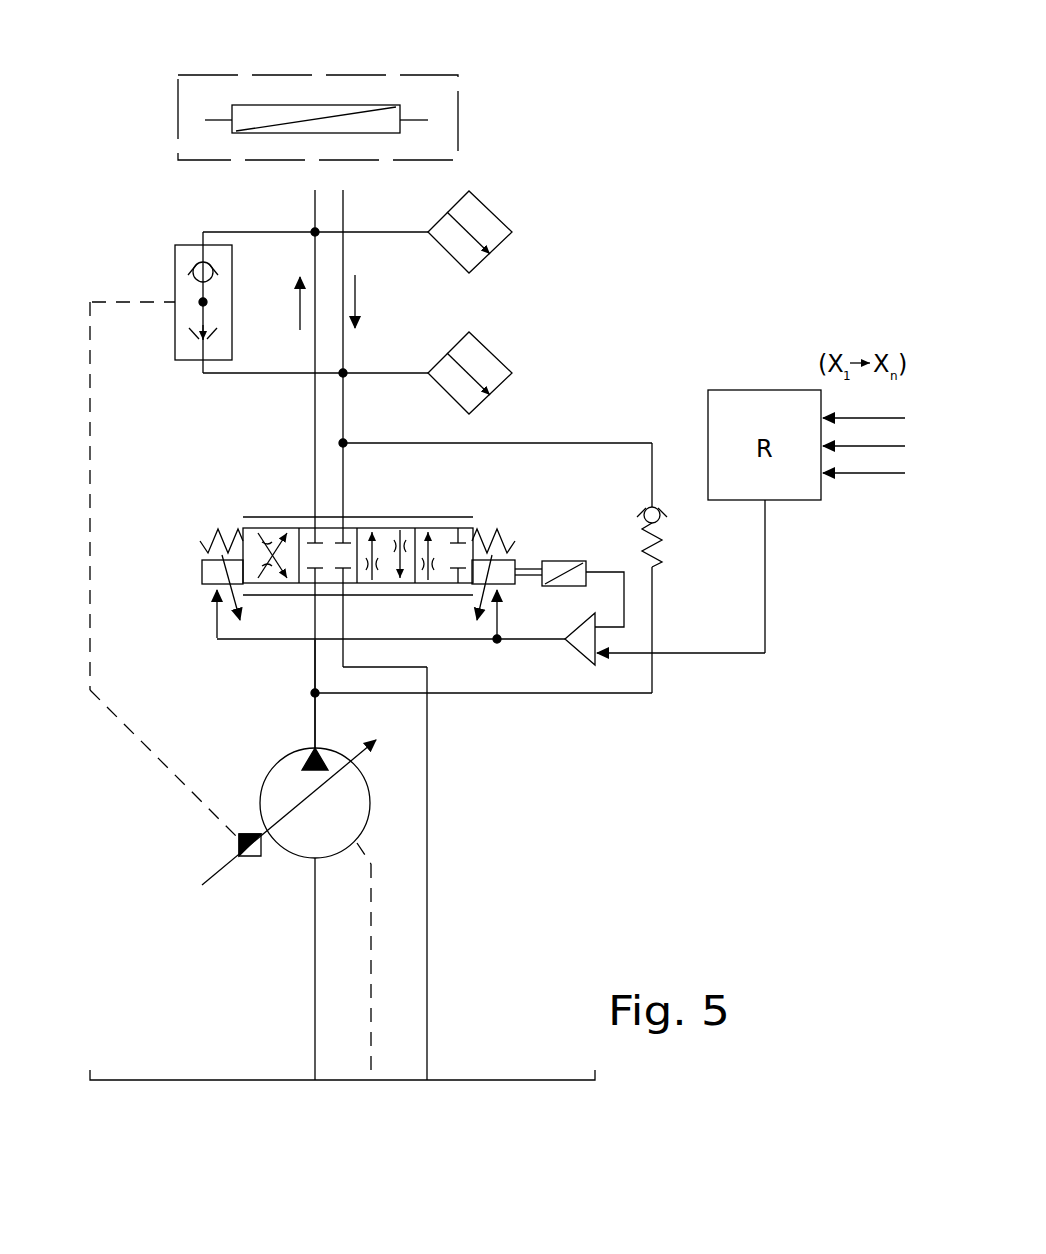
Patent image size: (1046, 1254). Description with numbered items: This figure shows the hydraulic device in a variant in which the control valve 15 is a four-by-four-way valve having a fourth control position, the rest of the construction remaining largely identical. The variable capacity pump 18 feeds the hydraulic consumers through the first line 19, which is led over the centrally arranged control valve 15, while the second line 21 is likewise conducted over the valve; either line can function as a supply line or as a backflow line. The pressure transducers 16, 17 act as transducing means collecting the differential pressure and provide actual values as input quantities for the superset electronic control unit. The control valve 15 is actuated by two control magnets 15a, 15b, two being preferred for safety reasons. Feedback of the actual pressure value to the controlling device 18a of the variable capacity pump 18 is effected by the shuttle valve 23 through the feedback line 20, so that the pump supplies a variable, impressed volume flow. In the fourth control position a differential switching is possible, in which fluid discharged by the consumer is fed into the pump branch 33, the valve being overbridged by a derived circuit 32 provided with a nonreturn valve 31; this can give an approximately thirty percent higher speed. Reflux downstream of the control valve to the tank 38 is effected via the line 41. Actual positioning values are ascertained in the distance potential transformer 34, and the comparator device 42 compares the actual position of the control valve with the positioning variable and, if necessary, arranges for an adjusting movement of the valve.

The control valve 15 is at (438, 537).
The control magnet 15a is at (503, 558).
The control magnet 15b is at (210, 548).
The pressure transducer 16 is at (483, 223).
The pressure transducer 17 is at (485, 365).
The variable capacity pump 18 is at (287, 775).
The controlling device 18a is at (261, 957).
The first line 19 is at (312, 270).
The feedback line 20 is at (90, 525).
The second line 21 is at (348, 215).
The shuttle valve 23 is at (187, 318).
The nonreturn valve 31 is at (657, 523).
The derived circuit 32 is at (655, 668).
The pump branch 33 is at (312, 668).
The distance potential transformer 34 is at (425, 110).
The tank 38 is at (148, 1080).
The line 41 is at (428, 832).
The comparator device 42 is at (583, 638).